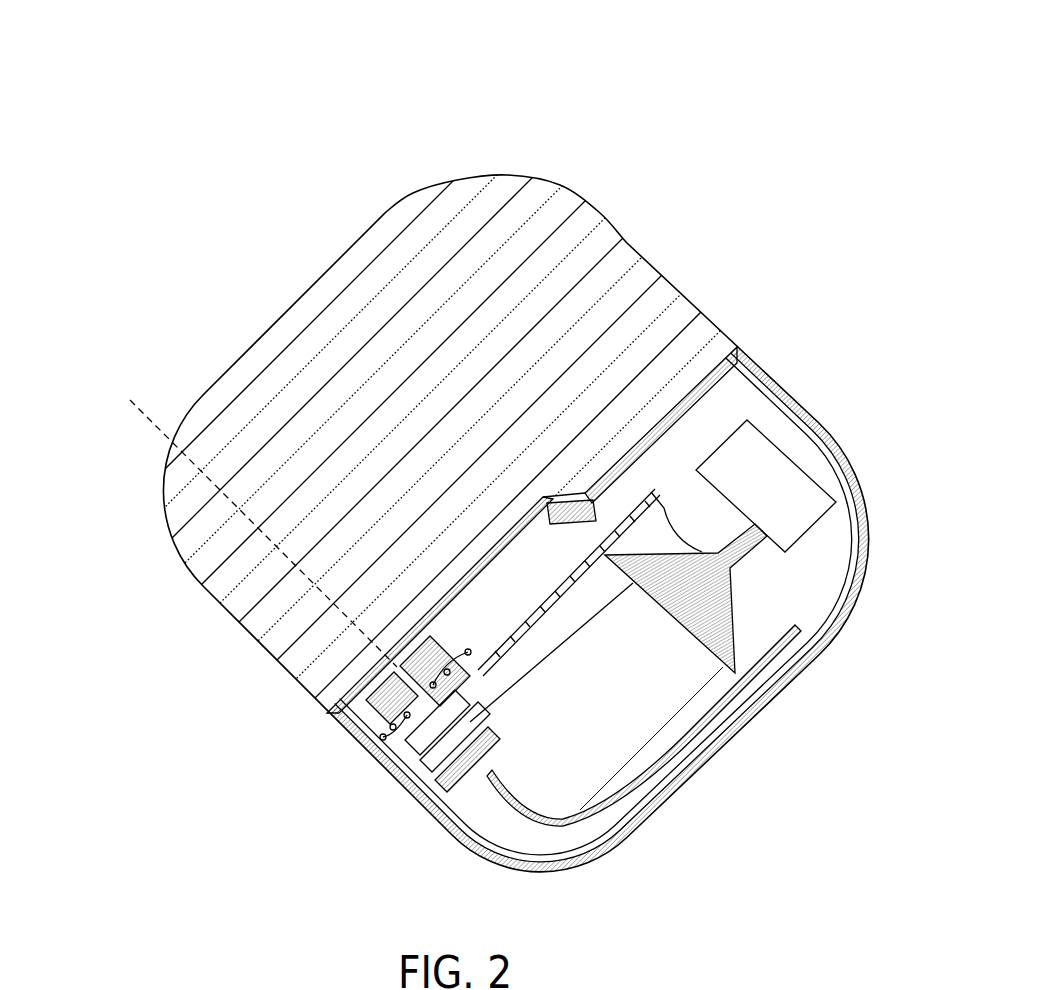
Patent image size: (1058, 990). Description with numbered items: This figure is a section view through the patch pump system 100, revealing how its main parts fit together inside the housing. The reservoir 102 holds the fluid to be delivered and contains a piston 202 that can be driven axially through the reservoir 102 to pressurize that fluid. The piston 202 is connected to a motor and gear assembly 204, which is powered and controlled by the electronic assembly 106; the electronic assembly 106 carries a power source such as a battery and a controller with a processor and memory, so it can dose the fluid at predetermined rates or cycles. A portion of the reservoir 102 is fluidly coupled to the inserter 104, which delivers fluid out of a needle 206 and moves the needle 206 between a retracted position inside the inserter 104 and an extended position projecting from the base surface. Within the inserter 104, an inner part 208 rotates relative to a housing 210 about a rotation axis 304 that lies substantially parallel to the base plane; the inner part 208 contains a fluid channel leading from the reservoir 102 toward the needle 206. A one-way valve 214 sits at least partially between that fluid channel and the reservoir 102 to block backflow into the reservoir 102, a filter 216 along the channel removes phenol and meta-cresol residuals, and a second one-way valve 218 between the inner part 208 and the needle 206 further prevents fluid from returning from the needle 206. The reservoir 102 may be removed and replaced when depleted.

The patch pump system 100 is at (778, 93).
The reservoir 102 is at (628, 729).
The inserter 104 is at (310, 719).
The electronic assembly 106 is at (462, 272).
The piston 202 is at (735, 636).
The motor and gear assembly 204 is at (763, 480).
The needle 206 is at (483, 632).
The inner part 208 is at (392, 712).
The housing 210 is at (408, 742).
The valve 214 is at (480, 777).
The filter 216 is at (440, 767).
The valve 218 is at (400, 684).
The rotation axis 304 is at (130, 400).